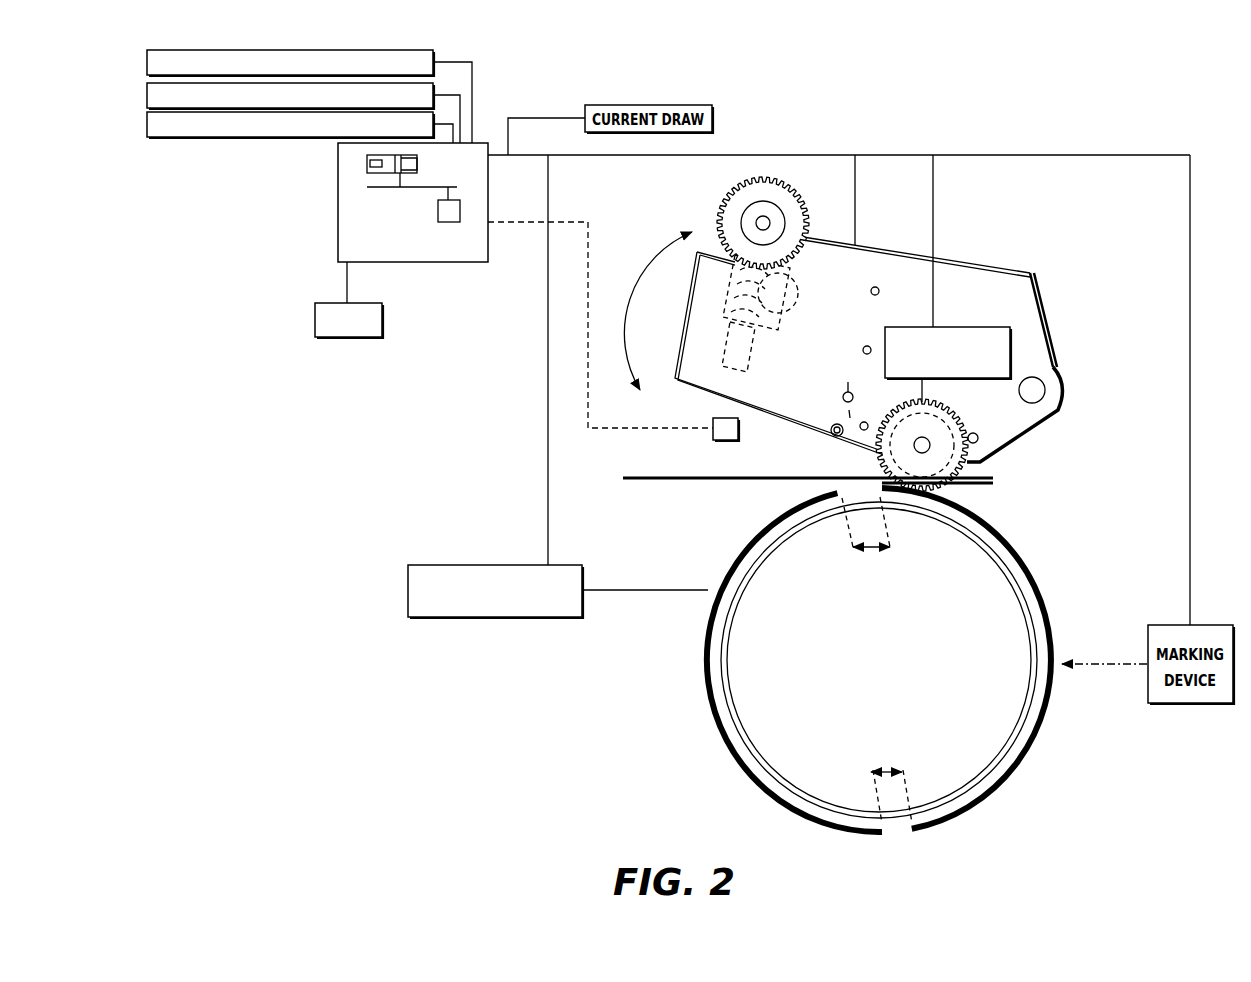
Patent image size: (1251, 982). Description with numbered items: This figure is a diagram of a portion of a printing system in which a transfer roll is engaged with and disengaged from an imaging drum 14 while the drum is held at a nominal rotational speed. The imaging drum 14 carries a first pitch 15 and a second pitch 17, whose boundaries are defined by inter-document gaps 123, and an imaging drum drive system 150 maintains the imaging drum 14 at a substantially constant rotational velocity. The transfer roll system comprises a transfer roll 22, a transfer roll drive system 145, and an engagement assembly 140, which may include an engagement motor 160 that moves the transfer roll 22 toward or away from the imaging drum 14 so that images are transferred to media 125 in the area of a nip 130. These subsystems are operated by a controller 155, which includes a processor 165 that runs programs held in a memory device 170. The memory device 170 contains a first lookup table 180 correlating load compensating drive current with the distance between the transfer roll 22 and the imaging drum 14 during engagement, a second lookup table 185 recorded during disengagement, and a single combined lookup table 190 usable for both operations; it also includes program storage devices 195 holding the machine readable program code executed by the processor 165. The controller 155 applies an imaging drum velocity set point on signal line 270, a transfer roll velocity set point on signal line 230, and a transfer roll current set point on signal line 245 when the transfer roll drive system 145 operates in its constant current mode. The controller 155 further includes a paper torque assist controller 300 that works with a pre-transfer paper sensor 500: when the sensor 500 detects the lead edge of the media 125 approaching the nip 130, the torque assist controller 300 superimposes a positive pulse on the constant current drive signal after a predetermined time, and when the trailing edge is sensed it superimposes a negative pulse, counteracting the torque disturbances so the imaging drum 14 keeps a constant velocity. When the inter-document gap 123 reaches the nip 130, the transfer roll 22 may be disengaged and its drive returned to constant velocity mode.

The signal line (imaging drum velocity set point) 270 is at (147, 53).
The signal line (transfer roll current set point) 245 is at (147, 86).
The signal line (transfer roll velocity set point) 230 is at (147, 116).
The memory device 170 is at (367, 158).
The single lookup table 190 is at (419, 160).
The first lookup table 180 is at (417, 170).
The program storage devices 195 is at (368, 163).
The second lookup table 185 is at (398, 187).
The processor 165 is at (438, 210).
The controller 155 is at (338, 207).
The paper torque assist controller 300 is at (361, 331).
The sensor 500 is at (713, 421).
The engagement motor 160 is at (737, 287).
The engagement assembly 140 is at (1047, 317).
The transfer roll drive system 145 is at (948, 380).
The transfer roll 22 is at (880, 463).
The media 125 is at (788, 483).
The nip 130 is at (953, 490).
The imaging drum 14 is at (725, 740).
The inter-document gap 123 is at (872, 555).
The second pitch 17 is at (702, 652).
The first pitch 15 is at (1047, 600).
The imaging drum drive system 150 is at (545, 618).